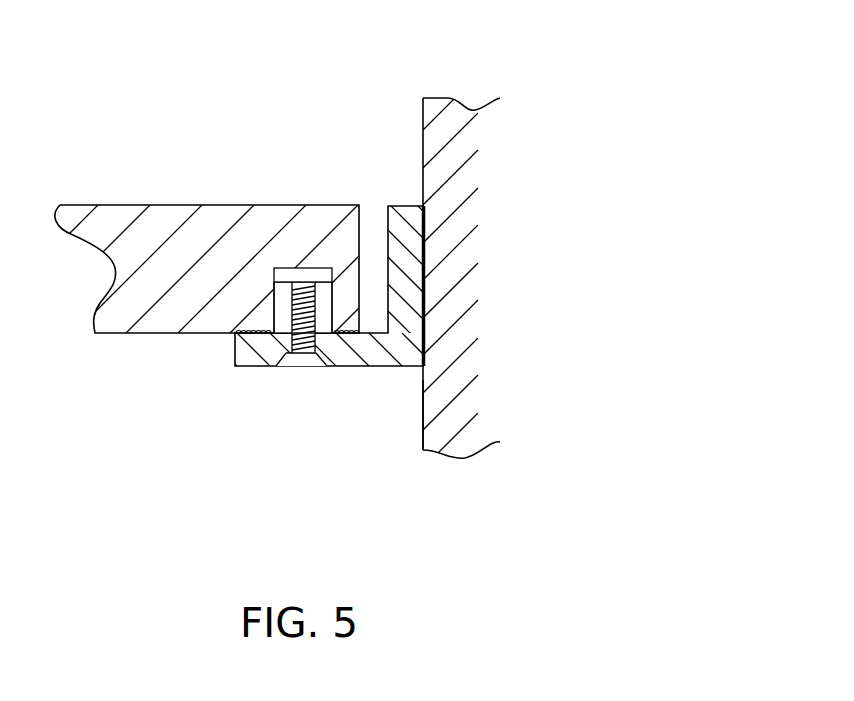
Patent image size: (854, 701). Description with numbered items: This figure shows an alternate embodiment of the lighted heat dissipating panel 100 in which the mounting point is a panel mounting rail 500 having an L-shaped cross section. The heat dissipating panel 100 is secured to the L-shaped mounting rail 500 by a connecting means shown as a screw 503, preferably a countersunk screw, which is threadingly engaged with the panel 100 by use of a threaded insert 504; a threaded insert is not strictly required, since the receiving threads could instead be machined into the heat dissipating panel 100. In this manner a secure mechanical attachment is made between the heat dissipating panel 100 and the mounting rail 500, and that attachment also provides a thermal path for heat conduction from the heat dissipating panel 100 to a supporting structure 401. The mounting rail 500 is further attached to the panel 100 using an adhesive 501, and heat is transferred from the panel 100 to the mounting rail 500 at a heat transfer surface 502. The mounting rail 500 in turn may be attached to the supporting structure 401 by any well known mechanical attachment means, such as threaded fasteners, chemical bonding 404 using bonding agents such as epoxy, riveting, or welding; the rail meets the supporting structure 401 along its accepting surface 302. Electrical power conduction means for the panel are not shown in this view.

The heat dissipating panel 100 is at (97, 339).
The supporting structure 401 is at (455, 120).
The chemical bonding 404 is at (423, 205).
The accepting surface 302 is at (421, 423).
The mounting rail 500 is at (236, 368).
The adhesive 501 is at (238, 327).
The heat transfer surface 502 is at (257, 327).
The screw 503 is at (308, 369).
The threaded insert 504 is at (323, 267).